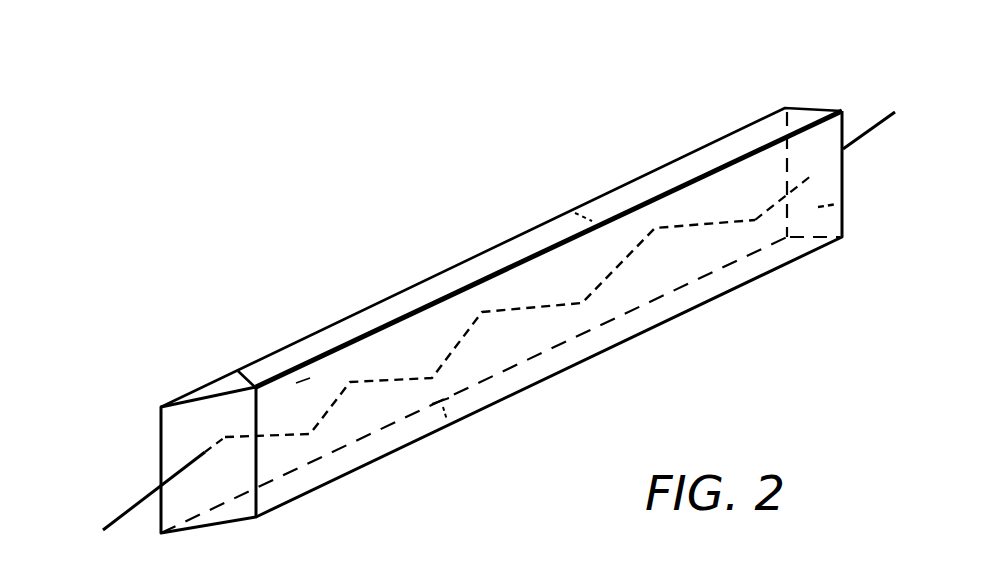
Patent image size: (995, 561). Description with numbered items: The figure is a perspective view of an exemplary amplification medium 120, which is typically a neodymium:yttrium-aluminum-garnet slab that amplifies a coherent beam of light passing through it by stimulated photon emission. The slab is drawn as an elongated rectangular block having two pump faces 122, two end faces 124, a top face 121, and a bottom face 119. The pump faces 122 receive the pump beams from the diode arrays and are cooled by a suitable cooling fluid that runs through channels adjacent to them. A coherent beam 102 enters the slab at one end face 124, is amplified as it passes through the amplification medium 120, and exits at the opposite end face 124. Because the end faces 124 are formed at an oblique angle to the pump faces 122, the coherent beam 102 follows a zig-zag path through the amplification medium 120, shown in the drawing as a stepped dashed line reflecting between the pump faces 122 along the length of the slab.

The amplification medium 120 is at (383, 153).
The top face 121 is at (465, 283).
The pump faces 122 is at (573, 212).
The coherent beam 102 is at (113, 525).
The end faces 124 is at (175, 424).
The bottom face 119 is at (447, 420).